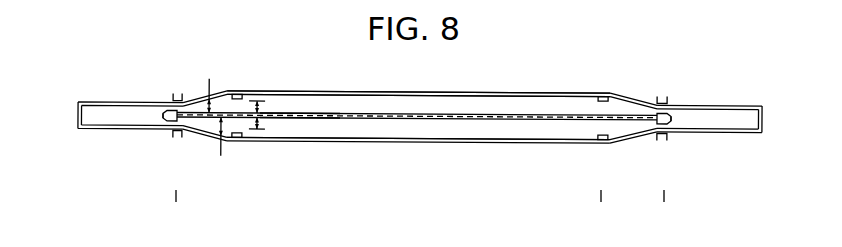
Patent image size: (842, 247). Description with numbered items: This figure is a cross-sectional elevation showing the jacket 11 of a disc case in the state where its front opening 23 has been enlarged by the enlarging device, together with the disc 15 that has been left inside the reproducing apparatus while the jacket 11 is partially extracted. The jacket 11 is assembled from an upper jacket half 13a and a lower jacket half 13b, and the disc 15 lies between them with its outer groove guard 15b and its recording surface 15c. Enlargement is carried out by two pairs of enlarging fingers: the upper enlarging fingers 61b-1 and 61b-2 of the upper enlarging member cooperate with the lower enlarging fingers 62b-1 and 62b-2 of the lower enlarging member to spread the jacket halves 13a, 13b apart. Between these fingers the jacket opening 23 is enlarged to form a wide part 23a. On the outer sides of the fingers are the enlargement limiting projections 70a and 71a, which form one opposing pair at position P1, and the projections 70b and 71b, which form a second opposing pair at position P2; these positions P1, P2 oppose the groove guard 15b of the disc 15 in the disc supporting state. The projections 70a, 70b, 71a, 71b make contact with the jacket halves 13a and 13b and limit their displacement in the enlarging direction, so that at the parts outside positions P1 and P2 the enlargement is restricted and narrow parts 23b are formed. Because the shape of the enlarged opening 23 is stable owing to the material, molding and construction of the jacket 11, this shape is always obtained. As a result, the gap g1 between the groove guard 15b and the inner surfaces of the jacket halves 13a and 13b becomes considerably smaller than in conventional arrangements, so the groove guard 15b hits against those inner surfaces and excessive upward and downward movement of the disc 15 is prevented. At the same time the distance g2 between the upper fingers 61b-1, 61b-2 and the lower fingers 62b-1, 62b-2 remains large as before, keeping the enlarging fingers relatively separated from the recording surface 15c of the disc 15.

The jacket 11 is at (557, 89).
The upper jacket half 13a is at (437, 93).
The lower jacket half 13b is at (440, 143).
The disc 15 is at (383, 122).
The groove guard 15b is at (160, 120).
The recording surface 15c is at (310, 113).
The opening 23 is at (488, 104).
The wide part 23a is at (123, 117).
The narrow parts 23b is at (381, 105).
The enlarging finger 61b-1 is at (236, 95).
The enlarging finger 61b-2 is at (603, 96).
The enlarging finger 62b-1 is at (236, 140).
The enlarging finger 62b-2 is at (603, 141).
The enlargement limiting projection 70a is at (177, 95).
The enlargement limiting projection 70b is at (663, 95).
The enlargement limiting projection 71a is at (177, 124).
The enlargement limiting projection 71b is at (660, 125).
The gap g1 is at (219, 117).
The distance g2 is at (265, 102).
The position P1 is at (178, 209).
The position P2 is at (638, 209).